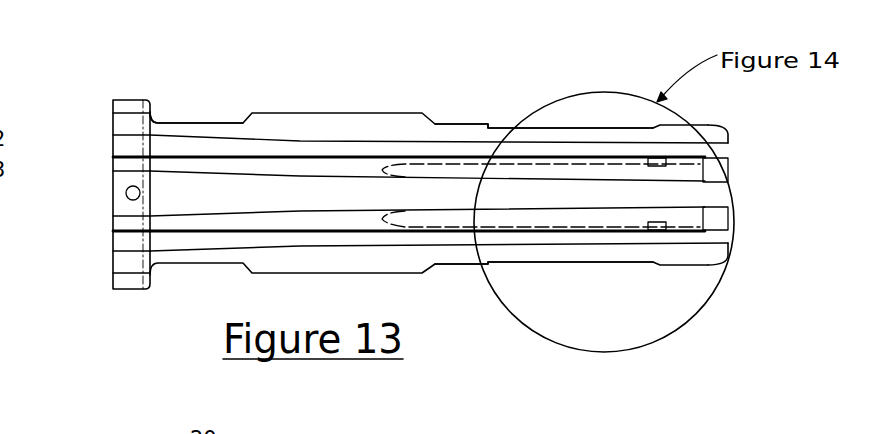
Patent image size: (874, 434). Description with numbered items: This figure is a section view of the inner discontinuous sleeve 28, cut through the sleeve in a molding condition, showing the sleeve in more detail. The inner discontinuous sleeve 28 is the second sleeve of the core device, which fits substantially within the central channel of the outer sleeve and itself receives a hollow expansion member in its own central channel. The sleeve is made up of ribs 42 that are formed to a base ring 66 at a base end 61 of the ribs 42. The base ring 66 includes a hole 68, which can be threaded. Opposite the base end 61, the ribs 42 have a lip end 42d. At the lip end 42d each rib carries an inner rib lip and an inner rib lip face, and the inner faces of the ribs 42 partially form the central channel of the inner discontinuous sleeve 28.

The inner discontinuous sleeve 28 is at (343, 94).
The base ring 66 is at (136, 98).
The base end 61 is at (161, 115).
The hole 68 is at (125, 196).
The ribs 42 is at (465, 136).
The lip end 42d is at (730, 137).